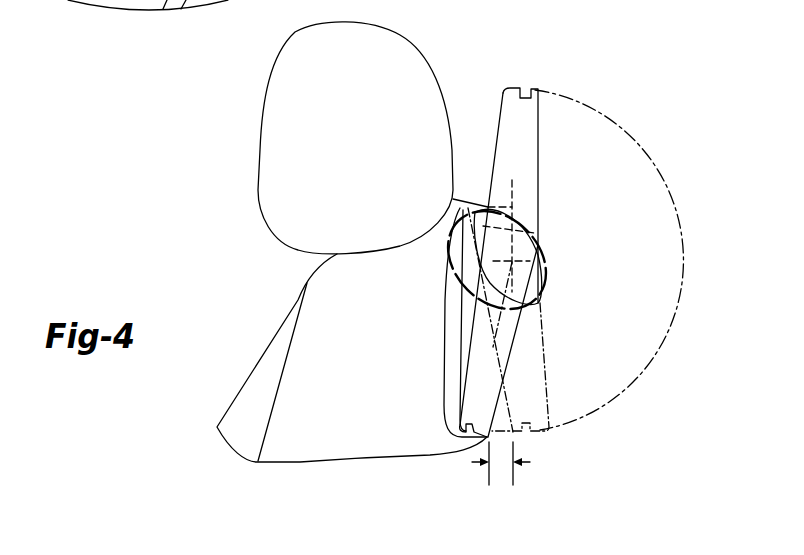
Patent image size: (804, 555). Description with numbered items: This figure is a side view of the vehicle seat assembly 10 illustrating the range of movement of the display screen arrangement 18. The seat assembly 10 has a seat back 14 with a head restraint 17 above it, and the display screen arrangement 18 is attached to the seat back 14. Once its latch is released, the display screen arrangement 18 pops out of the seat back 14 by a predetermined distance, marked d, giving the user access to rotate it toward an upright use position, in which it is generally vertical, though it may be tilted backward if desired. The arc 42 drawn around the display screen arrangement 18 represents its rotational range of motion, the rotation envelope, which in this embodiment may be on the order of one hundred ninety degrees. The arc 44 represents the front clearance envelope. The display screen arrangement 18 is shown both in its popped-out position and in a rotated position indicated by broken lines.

The seat assembly 10 is at (250, 88).
The seat back 14 is at (359, 433).
The head restraint 17 is at (398, 33).
The display screen arrangement 18 is at (496, 115).
The arc 42 is at (627, 128).
The arc 44 is at (468, 208).